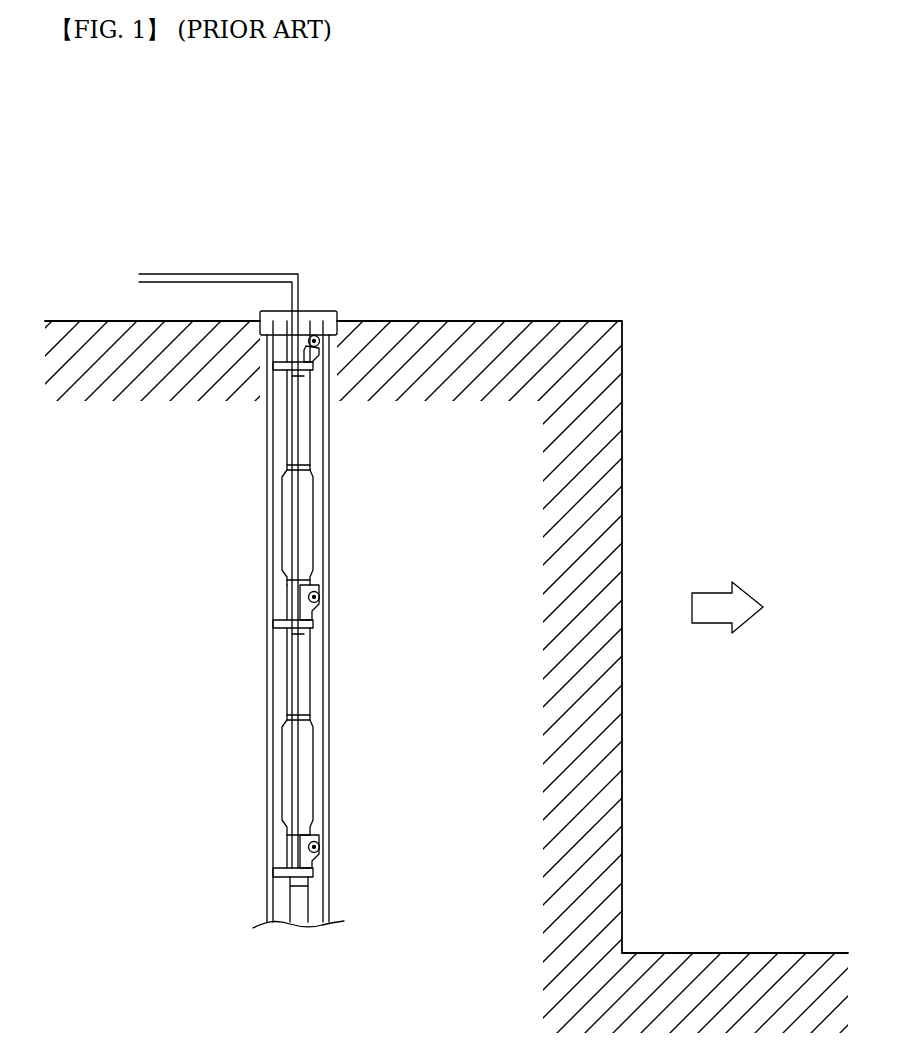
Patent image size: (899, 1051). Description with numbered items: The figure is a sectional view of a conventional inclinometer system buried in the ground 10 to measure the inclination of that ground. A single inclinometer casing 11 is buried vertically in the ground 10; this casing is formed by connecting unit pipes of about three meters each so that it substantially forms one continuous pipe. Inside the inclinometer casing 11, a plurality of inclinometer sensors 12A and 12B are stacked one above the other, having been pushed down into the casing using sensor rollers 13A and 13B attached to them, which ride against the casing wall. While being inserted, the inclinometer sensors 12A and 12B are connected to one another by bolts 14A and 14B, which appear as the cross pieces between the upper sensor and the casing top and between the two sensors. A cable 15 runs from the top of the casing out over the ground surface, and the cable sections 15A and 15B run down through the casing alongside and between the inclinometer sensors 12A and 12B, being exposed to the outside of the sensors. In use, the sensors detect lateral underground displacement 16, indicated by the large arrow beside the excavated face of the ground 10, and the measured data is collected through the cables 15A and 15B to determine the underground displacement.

The ground 10 is at (164, 370).
The inclinometer casing 11 is at (327, 870).
The inclinometer sensor 12A is at (316, 523).
The inclinometer sensor 12B is at (316, 770).
The sensor roller 13A is at (316, 328).
The sensor roller 13B is at (320, 592).
The bolt 14A is at (328, 360).
The bolt 14B is at (318, 620).
The cable 15 is at (212, 274).
The cable 15A is at (298, 430).
The cable 15B is at (298, 687).
The lateral underground displacement 16 is at (710, 592).